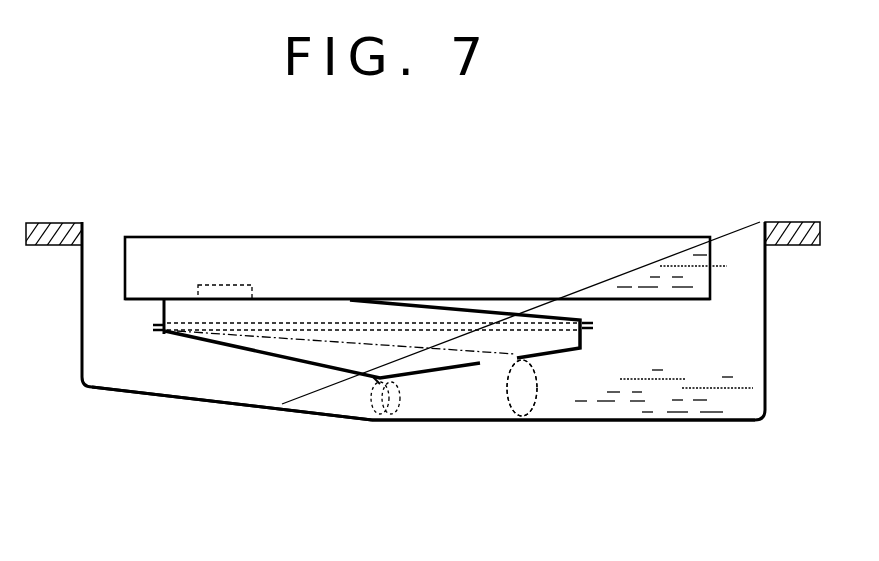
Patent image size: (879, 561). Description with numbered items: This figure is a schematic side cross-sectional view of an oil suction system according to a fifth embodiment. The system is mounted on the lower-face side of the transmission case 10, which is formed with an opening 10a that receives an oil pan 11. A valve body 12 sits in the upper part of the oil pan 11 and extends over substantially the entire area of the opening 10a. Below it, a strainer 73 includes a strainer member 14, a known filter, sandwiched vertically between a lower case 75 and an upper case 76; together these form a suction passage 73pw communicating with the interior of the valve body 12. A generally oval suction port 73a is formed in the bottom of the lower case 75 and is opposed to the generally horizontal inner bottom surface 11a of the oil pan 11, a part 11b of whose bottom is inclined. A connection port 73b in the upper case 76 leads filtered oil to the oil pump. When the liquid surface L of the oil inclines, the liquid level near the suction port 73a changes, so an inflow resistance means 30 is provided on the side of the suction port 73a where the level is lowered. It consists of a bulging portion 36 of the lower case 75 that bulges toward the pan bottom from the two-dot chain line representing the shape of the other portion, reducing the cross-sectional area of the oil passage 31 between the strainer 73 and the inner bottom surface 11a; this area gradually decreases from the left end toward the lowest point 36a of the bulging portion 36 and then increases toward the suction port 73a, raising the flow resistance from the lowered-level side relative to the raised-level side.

The transmission case 10 is at (52, 222).
The opening 10a is at (760, 236).
The oil pan 11 is at (767, 378).
The inner bottom surface 11a is at (575, 412).
The inclined part of bottom 11b is at (243, 398).
The valve body 12 is at (400, 237).
The strainer member 14 is at (407, 321).
The inflow resistance means 30 is at (342, 373).
The oil passage 31 is at (402, 417).
The bulging portion 36 is at (357, 378).
The lowest point 36a is at (370, 380).
The strainer 73 is at (594, 335).
The suction port 73a is at (495, 360).
The connection port 73b is at (218, 285).
The suction passage 73pw is at (287, 305).
The lower case 75 is at (205, 350).
The upper case 76 is at (162, 310).
The liquid surface L is at (638, 268).